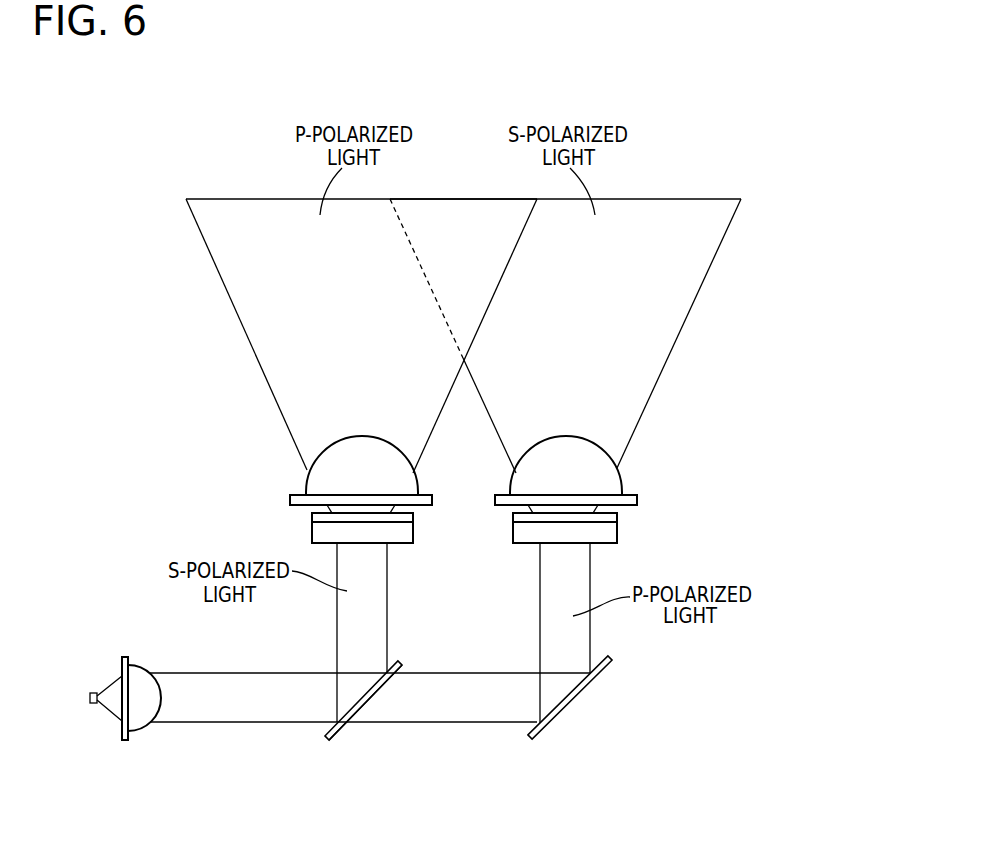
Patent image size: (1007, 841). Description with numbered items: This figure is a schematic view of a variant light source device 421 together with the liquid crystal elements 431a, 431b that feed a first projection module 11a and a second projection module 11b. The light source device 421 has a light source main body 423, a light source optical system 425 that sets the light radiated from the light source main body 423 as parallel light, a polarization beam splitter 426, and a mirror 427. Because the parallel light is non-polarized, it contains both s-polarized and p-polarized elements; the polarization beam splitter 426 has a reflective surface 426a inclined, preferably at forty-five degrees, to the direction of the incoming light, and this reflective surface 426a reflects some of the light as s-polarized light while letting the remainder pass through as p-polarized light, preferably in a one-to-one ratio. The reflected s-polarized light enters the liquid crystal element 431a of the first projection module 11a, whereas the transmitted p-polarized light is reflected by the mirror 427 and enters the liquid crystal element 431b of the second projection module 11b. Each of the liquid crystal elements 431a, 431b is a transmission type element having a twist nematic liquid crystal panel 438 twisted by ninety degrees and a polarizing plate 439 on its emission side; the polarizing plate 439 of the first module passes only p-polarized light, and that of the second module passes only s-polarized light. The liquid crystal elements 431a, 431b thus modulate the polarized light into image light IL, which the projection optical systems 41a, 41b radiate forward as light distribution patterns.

The first projection module 11a is at (162, 221).
The second projection module 11b is at (750, 230).
The projection optical system 41a is at (298, 468).
The projection optical system 41b is at (717, 442).
The liquid crystal element 431a is at (321, 535).
The liquid crystal element 431b is at (518, 518).
The liquid crystal panel 438 is at (398, 538).
The polarizing plate 439 is at (413, 520).
The image light IL is at (384, 511).
The light source device 421 is at (334, 666).
The light source main body 423 is at (93, 704).
The light source optical system 425 is at (130, 731).
The polarization beam splitter 426 is at (340, 731).
The reflective surface 426a is at (353, 702).
The mirror 427 is at (543, 733).